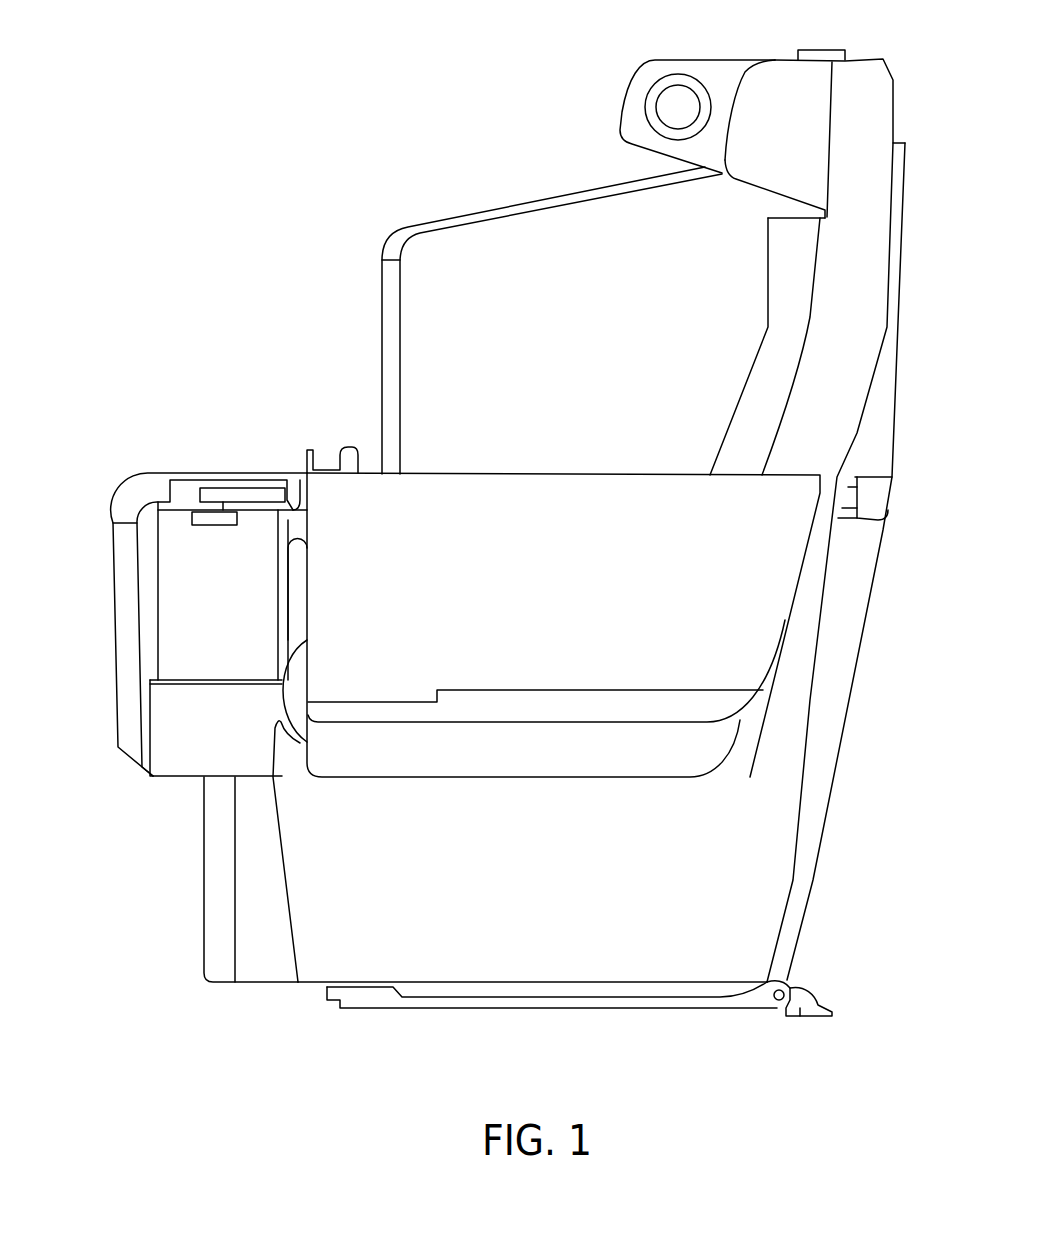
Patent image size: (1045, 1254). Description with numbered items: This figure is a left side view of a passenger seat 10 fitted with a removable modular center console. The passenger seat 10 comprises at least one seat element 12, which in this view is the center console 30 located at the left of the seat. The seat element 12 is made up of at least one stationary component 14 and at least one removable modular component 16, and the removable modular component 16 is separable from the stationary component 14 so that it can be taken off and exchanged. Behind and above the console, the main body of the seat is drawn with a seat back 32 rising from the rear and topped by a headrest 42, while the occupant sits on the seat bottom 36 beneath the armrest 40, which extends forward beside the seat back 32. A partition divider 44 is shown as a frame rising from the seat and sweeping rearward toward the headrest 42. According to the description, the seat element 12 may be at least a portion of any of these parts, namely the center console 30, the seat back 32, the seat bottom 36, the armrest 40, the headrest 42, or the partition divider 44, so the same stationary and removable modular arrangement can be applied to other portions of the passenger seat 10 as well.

The passenger seat 10 is at (145, 66).
The seat element 12 is at (104, 449).
The stationary component 14 is at (289, 520).
The removable modular component 16 is at (128, 693).
The center console 30 is at (122, 540).
The seat back 32 is at (868, 303).
The seat bottom 36 is at (282, 698).
The armrest 40 is at (778, 542).
The headrest 42 is at (790, 73).
The partition divider 44 is at (527, 220).